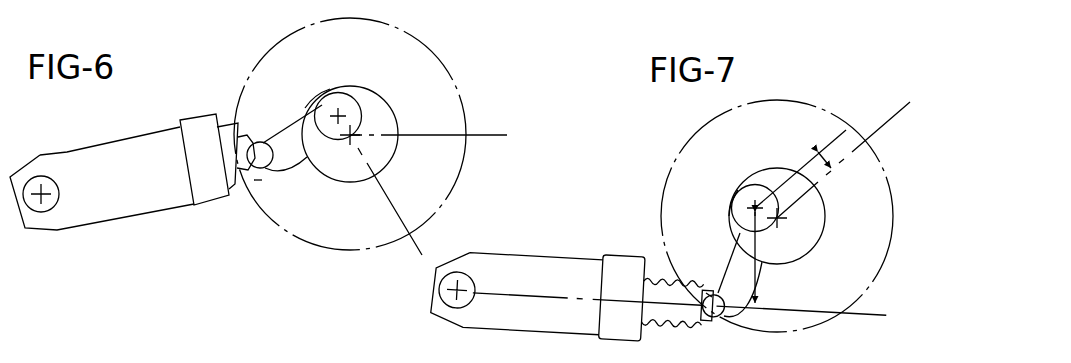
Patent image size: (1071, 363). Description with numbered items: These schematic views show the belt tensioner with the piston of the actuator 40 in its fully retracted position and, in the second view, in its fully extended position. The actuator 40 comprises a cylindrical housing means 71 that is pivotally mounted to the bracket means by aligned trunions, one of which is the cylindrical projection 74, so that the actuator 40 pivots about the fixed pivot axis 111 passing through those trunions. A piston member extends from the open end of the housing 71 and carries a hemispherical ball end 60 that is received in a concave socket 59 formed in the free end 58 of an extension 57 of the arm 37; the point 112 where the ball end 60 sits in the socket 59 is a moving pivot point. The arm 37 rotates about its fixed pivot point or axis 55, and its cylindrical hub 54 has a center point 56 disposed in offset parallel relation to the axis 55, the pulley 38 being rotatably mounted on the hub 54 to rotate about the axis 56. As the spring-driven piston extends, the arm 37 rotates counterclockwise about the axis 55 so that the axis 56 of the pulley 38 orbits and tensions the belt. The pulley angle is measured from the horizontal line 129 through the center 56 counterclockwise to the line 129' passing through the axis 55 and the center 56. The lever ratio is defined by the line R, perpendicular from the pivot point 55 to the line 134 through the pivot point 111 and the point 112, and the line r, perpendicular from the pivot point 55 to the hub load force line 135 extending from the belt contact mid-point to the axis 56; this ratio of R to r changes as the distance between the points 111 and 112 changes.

In FIG. 6, the arm 37 is at (305, 106).
In FIG. 7, the arm 37 is at (724, 212).
In FIG. 6, the pulley 38 is at (440, 53).
In FIG. 7, the pulley 38 is at (680, 143).
In FIG. 6, the actuator 40 is at (123, 133).
In FIG. 7, the actuator 40 is at (556, 251).
In FIG. 6, the cylindrical hub 54 is at (397, 117).
In FIG. 7, the cylindrical hub 54 is at (772, 167).
In FIG. 6, the pivot point or axis 55 is at (339, 113).
In FIG. 7, the pivot point or axis 55 is at (750, 196).
In FIG. 6, the center point or axis 56 is at (353, 132).
In FIG. 7, the center point or axis 56 is at (787, 220).
In FIG. 6, the extension 57 is at (305, 160).
In FIG. 7, the extension 57 is at (730, 240).
In FIG. 6, the free end 58 is at (282, 174).
In FIG. 7, the free end 58 is at (750, 321).
In FIG. 6, the concave socket 59 is at (258, 184).
In FIG. 7, the concave socket 59 is at (707, 292).
In FIG. 6, the ball end 60 is at (249, 130).
In FIG. 7, the ball end 60 is at (708, 318).
In FIG. 6, the cylindrical housing means 71 is at (118, 219).
In FIG. 7, the cylindrical housing means 71 is at (517, 323).
In FIG. 6, the projection or trunion 74 is at (42, 213).
In FIG. 7, the projection or trunion 74 is at (442, 298).
In FIG. 6, the pivot axis 111 is at (48, 176).
In FIG. 7, the pivot axis 111 is at (452, 290).
In FIG. 6, the point 112 is at (263, 141).
In FIG. 7, the point 112 is at (721, 318).
In FIG. 6, the horizontal line 129 is at (444, 110).
In FIG. 6, the line 129' is at (428, 201).
In FIG. 7, the line 134 is at (868, 317).
In FIG. 7, the hub load force line 135 is at (883, 120).
In FIG. 7, the line R is at (762, 245).
In FIG. 7, the line r is at (826, 158).